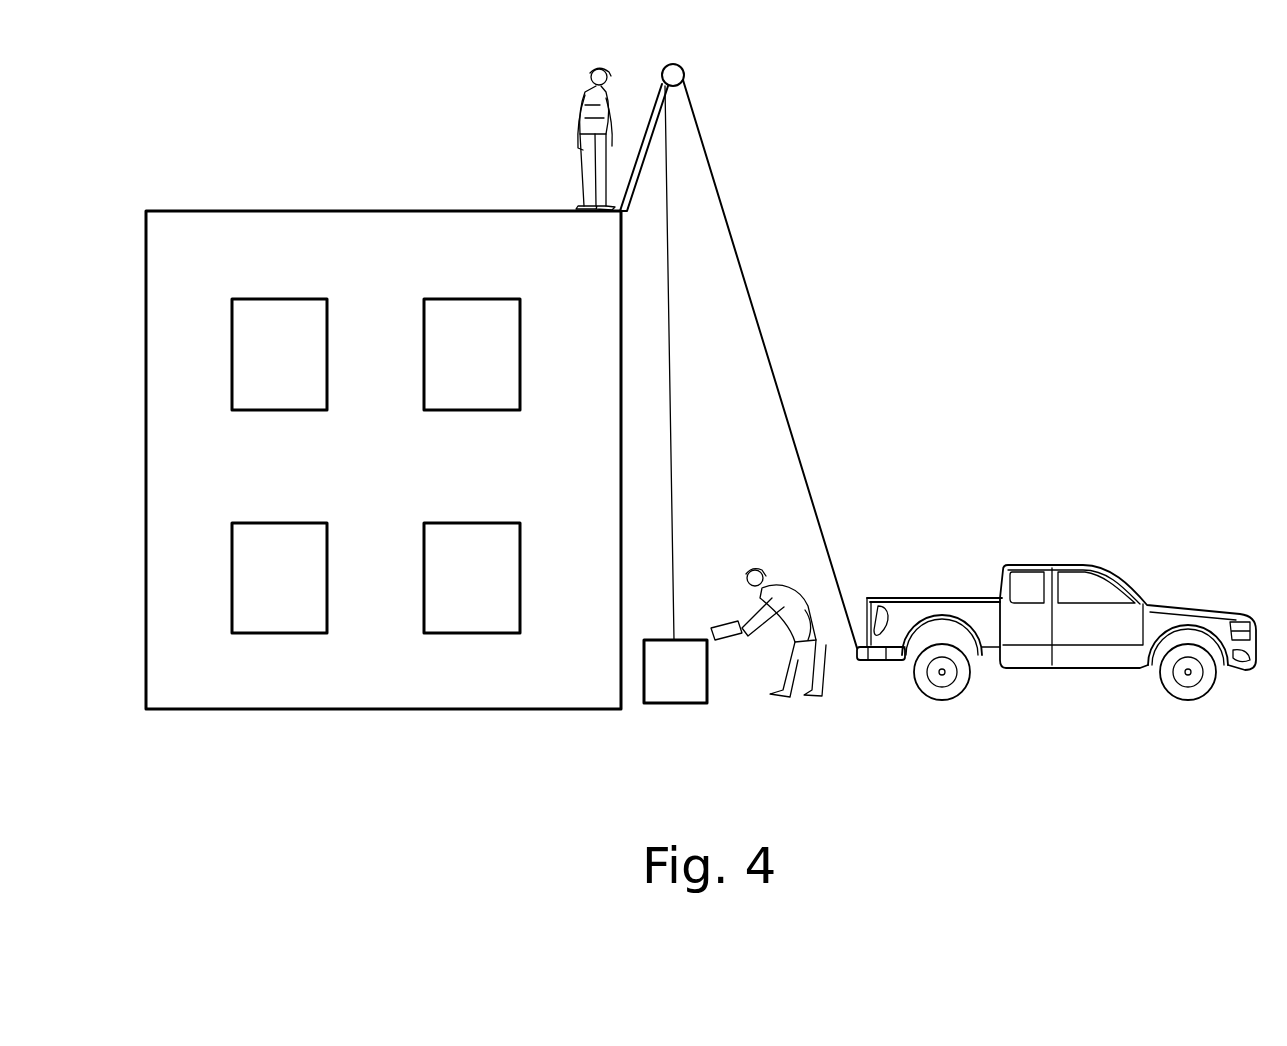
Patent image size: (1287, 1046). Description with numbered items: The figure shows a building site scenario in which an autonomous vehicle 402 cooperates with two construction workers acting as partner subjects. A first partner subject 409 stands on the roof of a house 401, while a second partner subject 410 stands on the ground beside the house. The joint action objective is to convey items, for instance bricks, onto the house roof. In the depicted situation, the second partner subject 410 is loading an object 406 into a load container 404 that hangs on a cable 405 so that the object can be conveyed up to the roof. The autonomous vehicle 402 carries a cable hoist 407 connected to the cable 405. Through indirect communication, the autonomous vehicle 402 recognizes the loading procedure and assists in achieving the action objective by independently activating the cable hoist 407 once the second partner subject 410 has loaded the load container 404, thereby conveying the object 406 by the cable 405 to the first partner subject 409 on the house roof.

The house 401 is at (265, 220).
The autonomous vehicle 402 is at (1075, 662).
The load container 404 is at (663, 700).
The cable 405 is at (790, 428).
The object 406 is at (713, 622).
The cable hoist 407 is at (868, 663).
The first partner subject 409 is at (580, 88).
The second partner subject 410 is at (780, 657).